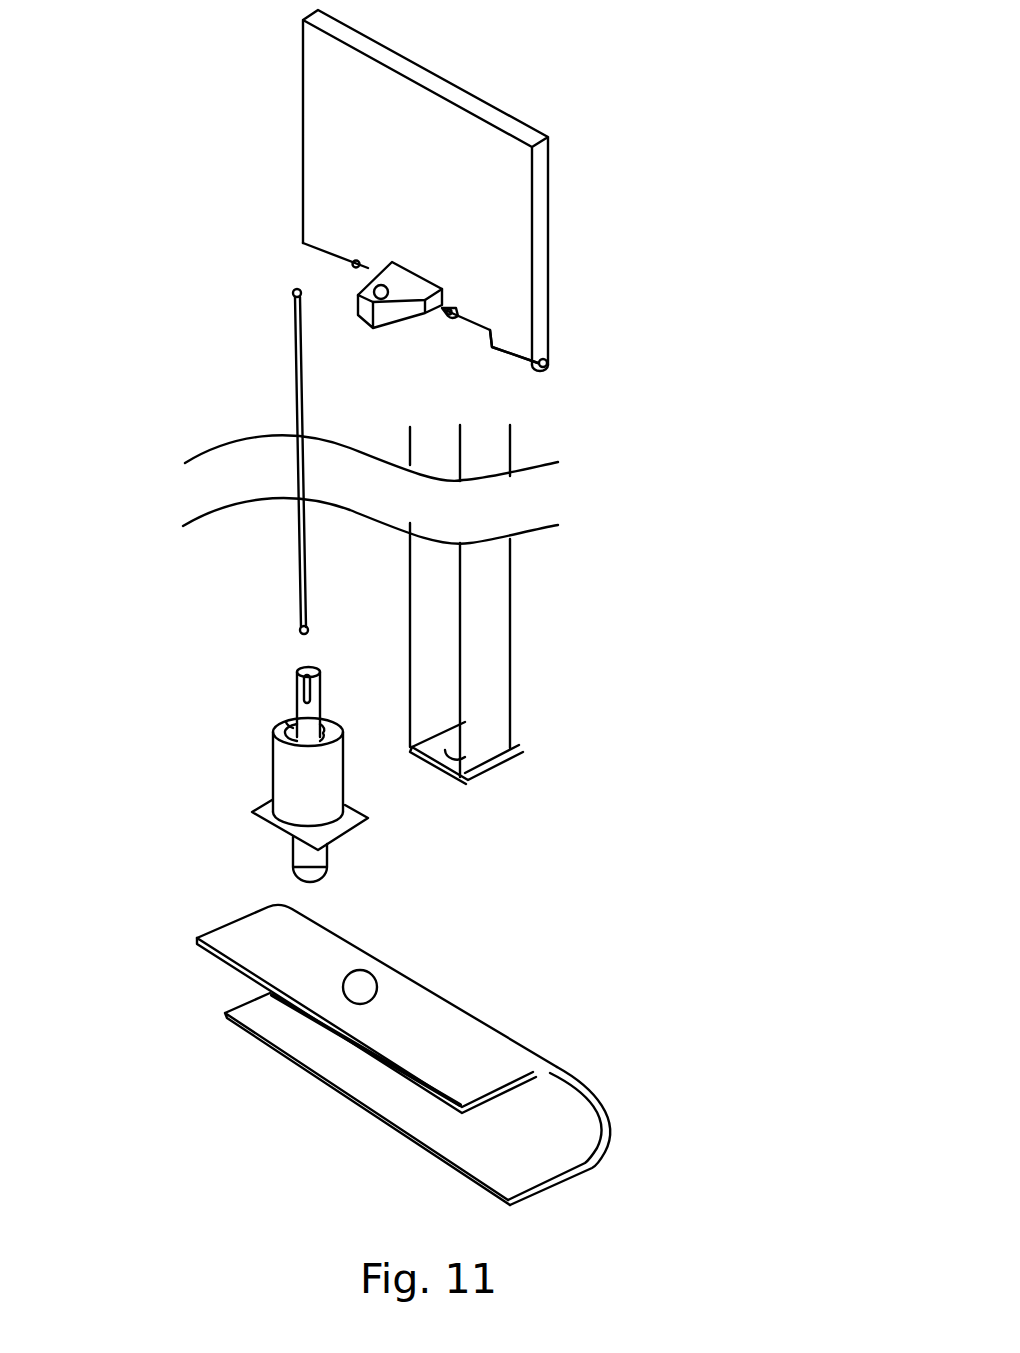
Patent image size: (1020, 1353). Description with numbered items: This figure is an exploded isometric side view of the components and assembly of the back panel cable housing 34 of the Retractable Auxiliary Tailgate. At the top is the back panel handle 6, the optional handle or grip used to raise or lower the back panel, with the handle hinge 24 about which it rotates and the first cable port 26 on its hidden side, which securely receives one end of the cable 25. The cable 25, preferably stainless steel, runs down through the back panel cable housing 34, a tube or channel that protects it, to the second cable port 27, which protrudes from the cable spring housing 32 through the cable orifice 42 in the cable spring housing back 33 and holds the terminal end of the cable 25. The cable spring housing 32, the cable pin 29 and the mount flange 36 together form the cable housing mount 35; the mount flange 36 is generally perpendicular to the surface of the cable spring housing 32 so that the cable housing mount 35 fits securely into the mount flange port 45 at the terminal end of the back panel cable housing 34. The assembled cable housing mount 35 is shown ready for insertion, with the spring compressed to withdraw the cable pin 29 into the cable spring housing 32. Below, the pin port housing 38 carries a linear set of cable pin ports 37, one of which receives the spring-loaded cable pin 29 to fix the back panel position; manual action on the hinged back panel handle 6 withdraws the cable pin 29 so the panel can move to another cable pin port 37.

The back panel handle 6 is at (352, 150).
The first cable port 26 is at (381, 280).
The handle hinge 24 is at (460, 363).
The cable 25 is at (302, 568).
The back panel cable housing 34 is at (483, 597).
The mount flange port 45 is at (438, 748).
The cable spring housing 32 is at (302, 785).
The cable spring housing back 33 is at (335, 727).
The second cable port 27 is at (303, 695).
The cable orifice 42 is at (292, 725).
The mount flange 36 is at (250, 813).
The cable pin 29 is at (330, 870).
The cable housing mount 35 is at (437, 848).
The pin port housing 38 is at (427, 1030).
The cable pin port 37 is at (357, 983).